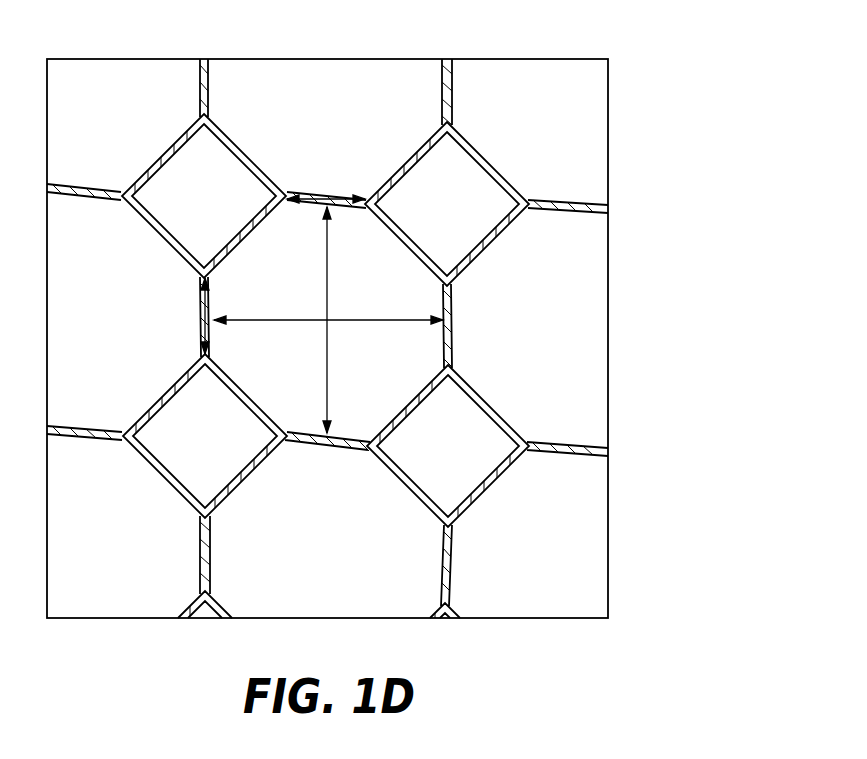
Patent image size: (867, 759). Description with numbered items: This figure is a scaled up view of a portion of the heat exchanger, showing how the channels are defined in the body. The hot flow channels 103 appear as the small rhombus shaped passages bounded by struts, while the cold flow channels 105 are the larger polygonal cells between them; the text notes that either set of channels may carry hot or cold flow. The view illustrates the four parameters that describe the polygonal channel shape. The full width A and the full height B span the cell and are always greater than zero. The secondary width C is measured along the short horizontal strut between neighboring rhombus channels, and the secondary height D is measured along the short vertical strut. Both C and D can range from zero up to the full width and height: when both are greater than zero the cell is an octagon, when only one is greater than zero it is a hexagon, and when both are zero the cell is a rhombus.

The hot flow channel 103 is at (446, 196).
The cold flow channel 105 is at (550, 335).
The full width A is at (328, 307).
The full height B is at (317, 320).
The secondary width C is at (326, 183).
The secondary height D is at (193, 316).